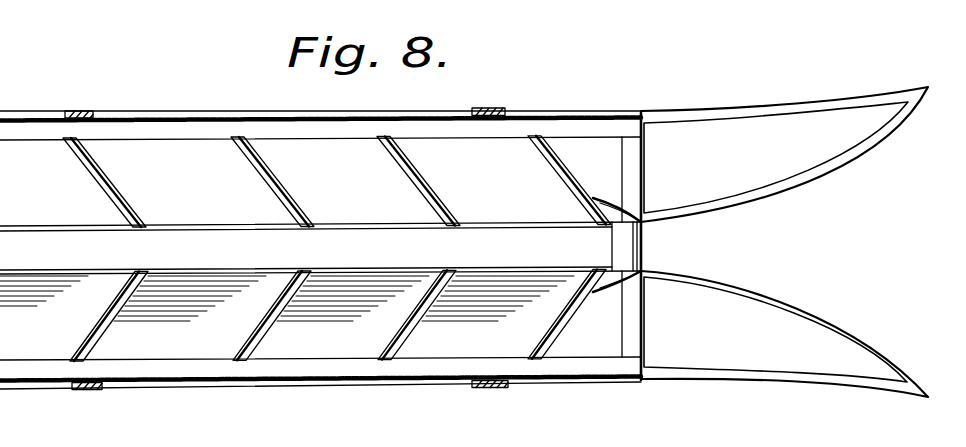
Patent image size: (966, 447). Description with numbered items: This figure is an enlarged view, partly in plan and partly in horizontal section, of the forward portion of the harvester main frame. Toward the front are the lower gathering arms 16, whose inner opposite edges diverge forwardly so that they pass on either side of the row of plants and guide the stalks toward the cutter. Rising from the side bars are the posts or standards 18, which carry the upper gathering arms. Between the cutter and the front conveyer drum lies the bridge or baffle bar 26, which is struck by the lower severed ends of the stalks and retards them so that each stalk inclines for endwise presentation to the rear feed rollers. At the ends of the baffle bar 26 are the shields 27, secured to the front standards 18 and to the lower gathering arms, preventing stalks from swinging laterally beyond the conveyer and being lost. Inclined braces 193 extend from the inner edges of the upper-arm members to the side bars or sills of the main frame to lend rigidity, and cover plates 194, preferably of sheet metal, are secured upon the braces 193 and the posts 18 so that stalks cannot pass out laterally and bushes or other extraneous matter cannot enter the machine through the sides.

The lower gathering arm 16 is at (784, 242).
The post or standard 18 is at (84, 111).
The bridge or baffle bar 26 is at (625, 249).
The shield 27 is at (613, 212).
The inclined brace 193 is at (290, 191).
The cover plate 194 is at (370, 112).